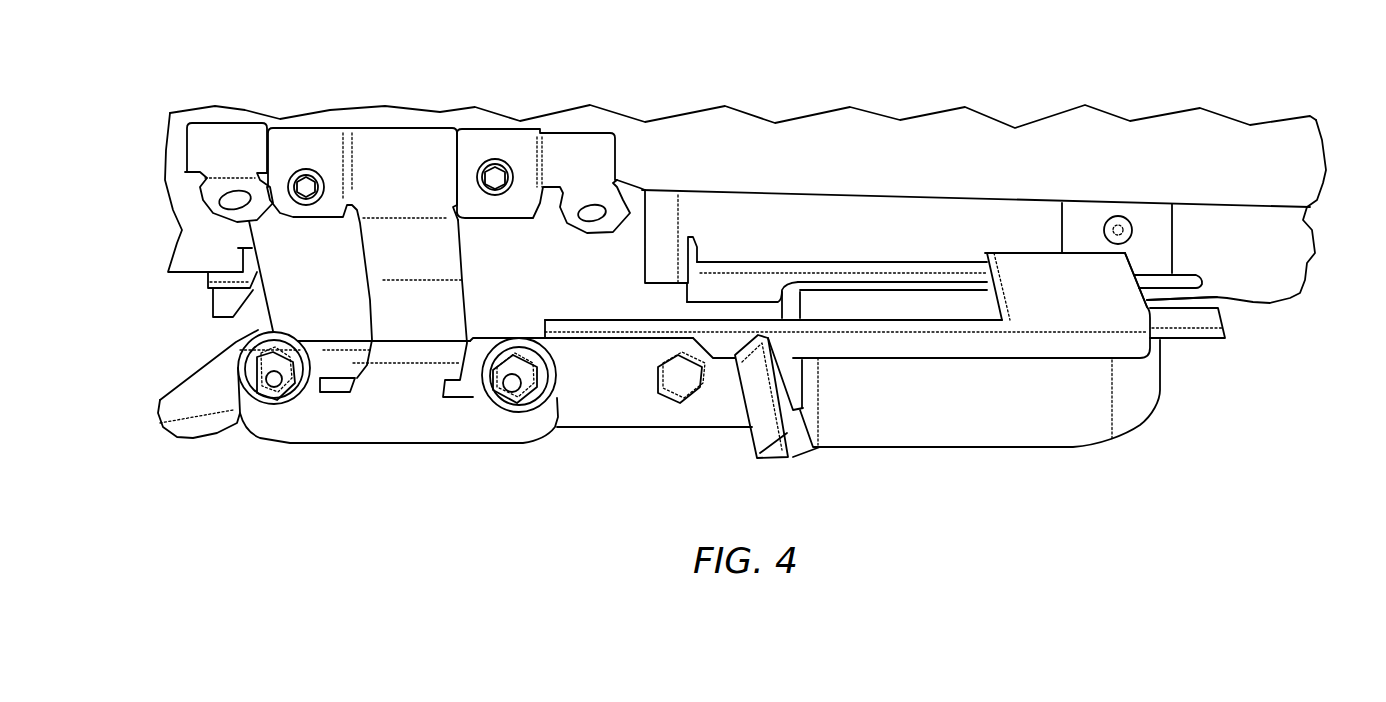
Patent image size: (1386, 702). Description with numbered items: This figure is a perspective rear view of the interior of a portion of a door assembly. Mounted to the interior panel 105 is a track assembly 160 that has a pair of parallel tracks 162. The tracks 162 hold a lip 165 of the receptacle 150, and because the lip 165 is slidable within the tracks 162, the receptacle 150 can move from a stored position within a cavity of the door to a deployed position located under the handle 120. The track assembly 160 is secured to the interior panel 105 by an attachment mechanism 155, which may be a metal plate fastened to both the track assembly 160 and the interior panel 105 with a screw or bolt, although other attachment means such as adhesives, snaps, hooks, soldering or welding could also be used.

The interior panel 105 is at (972, 230).
The handle 120 is at (610, 380).
The receptacle 150 is at (1063, 398).
The attachment mechanism 155 is at (1153, 235).
The track assembly 160 is at (1137, 270).
The tracks 162 is at (817, 327).
The lip 165 is at (790, 312).